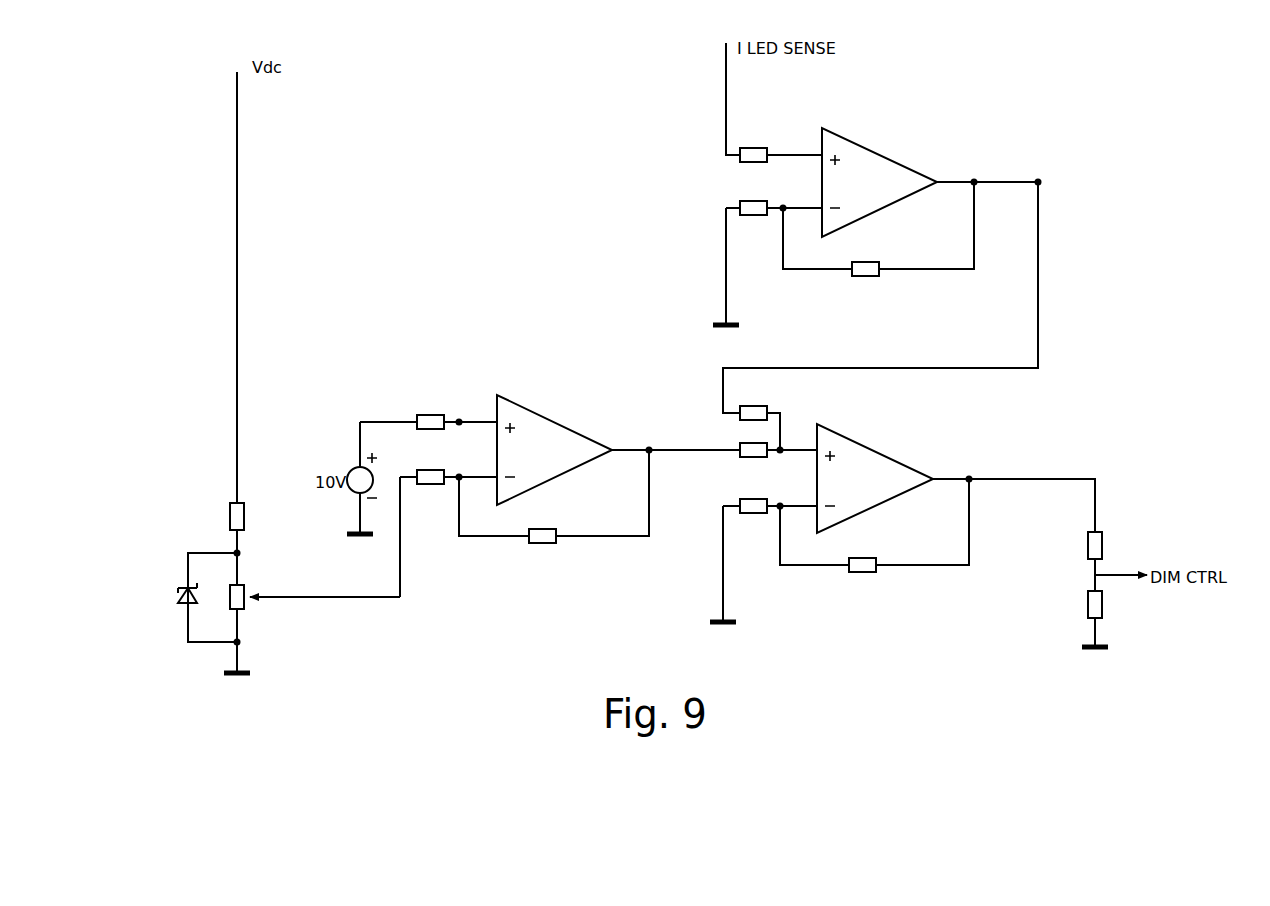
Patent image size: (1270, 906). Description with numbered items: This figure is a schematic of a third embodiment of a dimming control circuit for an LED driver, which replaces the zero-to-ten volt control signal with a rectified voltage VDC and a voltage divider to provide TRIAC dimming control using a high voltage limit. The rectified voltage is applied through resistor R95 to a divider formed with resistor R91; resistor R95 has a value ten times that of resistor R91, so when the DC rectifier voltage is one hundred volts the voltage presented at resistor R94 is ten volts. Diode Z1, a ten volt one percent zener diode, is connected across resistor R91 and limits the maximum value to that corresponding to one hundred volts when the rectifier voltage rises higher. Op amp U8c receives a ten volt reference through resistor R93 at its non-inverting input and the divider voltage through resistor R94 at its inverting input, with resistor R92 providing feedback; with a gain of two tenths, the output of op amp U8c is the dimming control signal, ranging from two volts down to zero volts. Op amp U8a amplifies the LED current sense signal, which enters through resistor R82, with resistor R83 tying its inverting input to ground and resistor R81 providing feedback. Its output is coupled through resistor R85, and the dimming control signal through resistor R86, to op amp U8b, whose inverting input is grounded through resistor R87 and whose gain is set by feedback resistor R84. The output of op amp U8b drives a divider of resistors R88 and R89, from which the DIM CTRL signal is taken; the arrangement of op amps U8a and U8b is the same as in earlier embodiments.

The feedback resistor R81 is at (866, 279).
The input resistor R82 is at (752, 167).
The resistor R83 is at (752, 221).
The feedback resistor R84 is at (864, 576).
The resistor R85 is at (752, 404).
The resistor R86 is at (752, 462).
The resistor R87 is at (752, 516).
The resistor R88 is at (1113, 545).
The resistor R89 is at (1113, 604).
The resistor R91 is at (315, 603).
The feedback resistor R92 is at (542, 548).
The resistor R93 is at (431, 414).
The resistor R94 is at (431, 469).
The resistor R95 is at (254, 516).
The op amp U8a is at (879, 182).
The op amp U8b is at (875, 478).
The op amp U8c is at (554, 446).
The diode Z1 is at (176, 597).